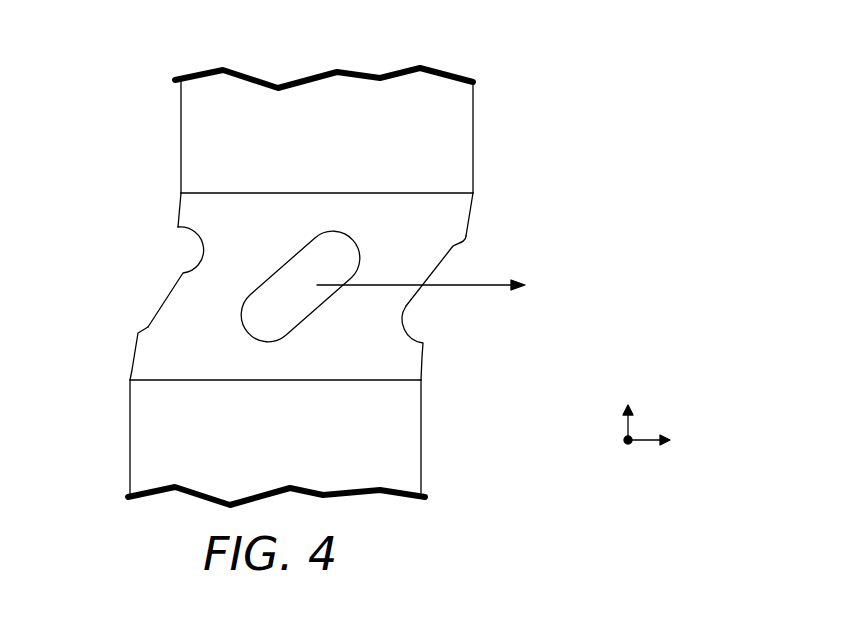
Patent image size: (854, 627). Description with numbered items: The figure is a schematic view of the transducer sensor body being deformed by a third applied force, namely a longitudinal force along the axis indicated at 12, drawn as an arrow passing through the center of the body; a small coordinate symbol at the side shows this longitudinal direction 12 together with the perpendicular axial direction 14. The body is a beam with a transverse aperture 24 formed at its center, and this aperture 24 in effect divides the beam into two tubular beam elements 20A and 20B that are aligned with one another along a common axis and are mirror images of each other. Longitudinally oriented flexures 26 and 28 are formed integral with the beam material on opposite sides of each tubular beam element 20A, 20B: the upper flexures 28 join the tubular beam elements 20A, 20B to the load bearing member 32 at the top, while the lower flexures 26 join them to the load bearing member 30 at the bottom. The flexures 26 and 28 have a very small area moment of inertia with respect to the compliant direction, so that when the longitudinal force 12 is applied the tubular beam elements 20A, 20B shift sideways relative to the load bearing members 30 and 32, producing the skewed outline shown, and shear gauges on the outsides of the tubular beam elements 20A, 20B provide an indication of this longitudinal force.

The longitudinal force 12 is at (648, 443).
The axial force 14 is at (625, 422).
The tubular beam element 20A is at (187, 270).
The tubular beam element 20B is at (442, 262).
The transverse aperture 24 is at (313, 323).
The flexure 26 is at (137, 353).
The flexure 28 is at (177, 213).
The load bearing member 30 is at (415, 433).
The load bearing member 32 is at (473, 143).